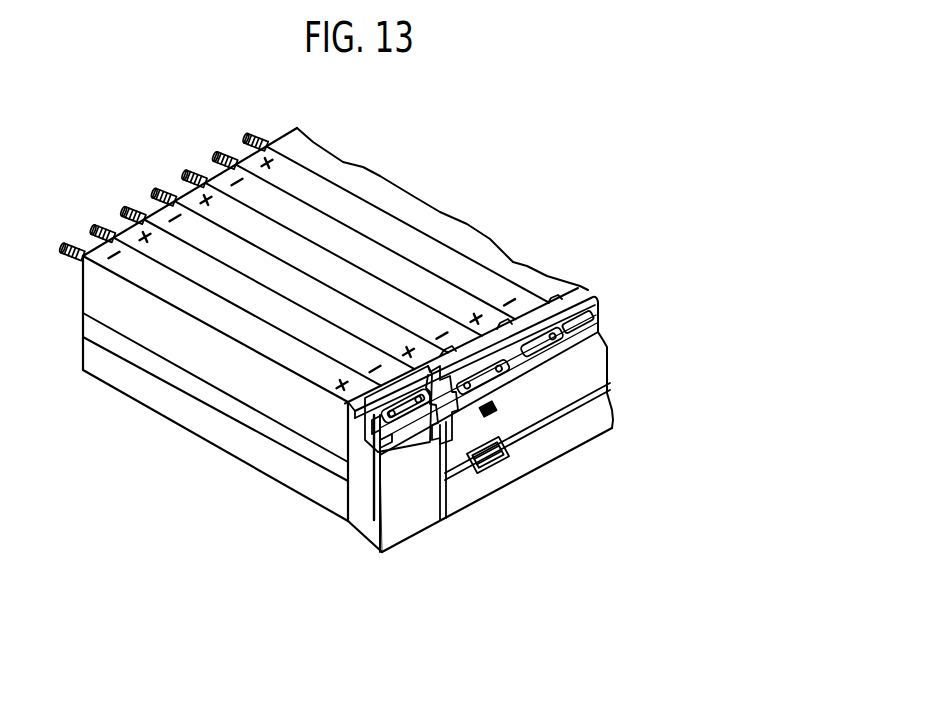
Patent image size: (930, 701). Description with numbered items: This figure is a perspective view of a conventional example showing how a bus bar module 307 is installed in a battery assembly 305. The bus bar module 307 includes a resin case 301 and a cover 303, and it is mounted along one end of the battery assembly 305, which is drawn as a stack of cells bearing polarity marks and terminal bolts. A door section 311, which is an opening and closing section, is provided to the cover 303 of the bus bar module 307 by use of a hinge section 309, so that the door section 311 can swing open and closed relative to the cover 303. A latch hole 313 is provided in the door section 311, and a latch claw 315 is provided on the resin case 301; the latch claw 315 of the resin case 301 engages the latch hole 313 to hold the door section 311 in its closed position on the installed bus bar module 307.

The resin case 301 is at (528, 308).
The cover 303 is at (572, 387).
The battery assembly 305 is at (319, 185).
The bus bar module 307 is at (589, 370).
The hinge section 309 is at (470, 460).
The door section 311 is at (420, 517).
The latch hole 313 is at (347, 404).
The latch claw 315 is at (380, 460).